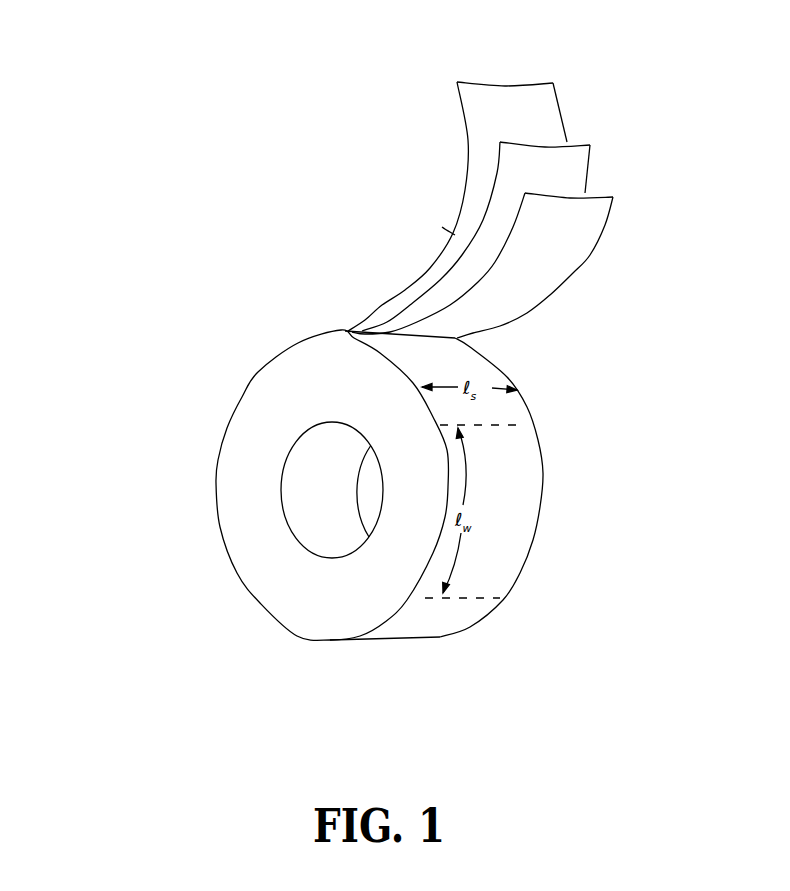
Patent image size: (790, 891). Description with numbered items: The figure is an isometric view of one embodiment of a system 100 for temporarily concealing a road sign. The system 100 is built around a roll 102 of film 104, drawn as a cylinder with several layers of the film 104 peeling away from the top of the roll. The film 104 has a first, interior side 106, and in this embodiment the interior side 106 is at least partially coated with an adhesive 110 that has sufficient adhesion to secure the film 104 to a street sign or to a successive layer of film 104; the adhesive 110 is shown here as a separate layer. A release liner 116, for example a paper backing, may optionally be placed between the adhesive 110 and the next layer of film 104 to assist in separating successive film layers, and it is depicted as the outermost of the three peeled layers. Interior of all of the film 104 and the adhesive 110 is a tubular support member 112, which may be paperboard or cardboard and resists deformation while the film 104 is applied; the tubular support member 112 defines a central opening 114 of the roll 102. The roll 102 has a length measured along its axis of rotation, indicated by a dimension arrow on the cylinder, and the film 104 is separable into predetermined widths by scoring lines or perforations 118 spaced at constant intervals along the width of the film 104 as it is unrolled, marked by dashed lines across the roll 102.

The system 100 is at (110, 140).
The roll 102 is at (270, 592).
The film 104 is at (554, 90).
The interior side 106 is at (452, 237).
The adhesive 110 is at (589, 158).
The tubular support member 112 is at (300, 515).
The central opening 114 is at (307, 470).
The release liner 116 is at (596, 245).
The perforations 118 is at (520, 425).